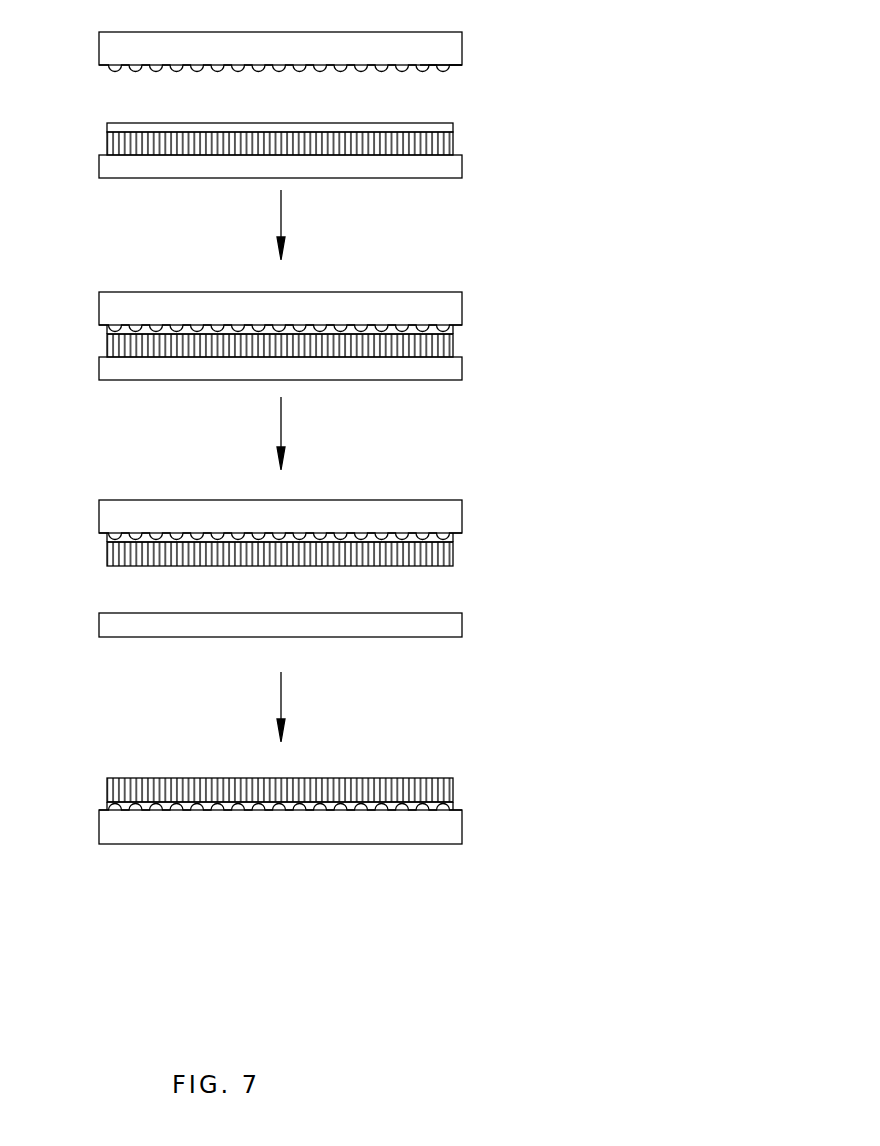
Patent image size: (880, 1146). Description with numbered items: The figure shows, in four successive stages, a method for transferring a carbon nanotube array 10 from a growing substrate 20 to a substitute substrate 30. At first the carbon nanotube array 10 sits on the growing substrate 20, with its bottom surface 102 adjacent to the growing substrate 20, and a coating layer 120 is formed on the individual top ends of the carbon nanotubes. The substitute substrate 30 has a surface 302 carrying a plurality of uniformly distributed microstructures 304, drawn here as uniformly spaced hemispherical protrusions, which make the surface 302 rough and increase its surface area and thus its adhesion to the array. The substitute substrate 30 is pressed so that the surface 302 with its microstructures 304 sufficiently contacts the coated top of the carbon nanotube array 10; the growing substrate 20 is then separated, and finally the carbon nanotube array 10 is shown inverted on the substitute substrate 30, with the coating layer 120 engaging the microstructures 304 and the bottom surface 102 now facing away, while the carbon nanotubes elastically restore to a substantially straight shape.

The substitute substrate 30 is at (320, 461).
The microstructures 304 is at (446, 70).
The surface 302 is at (433, 68).
The carbon nanotube array 10 is at (281, 458).
The growing substrate 20 is at (455, 168).
The coating layer 120 is at (127, 123).
The bottom surface 102 is at (143, 155).